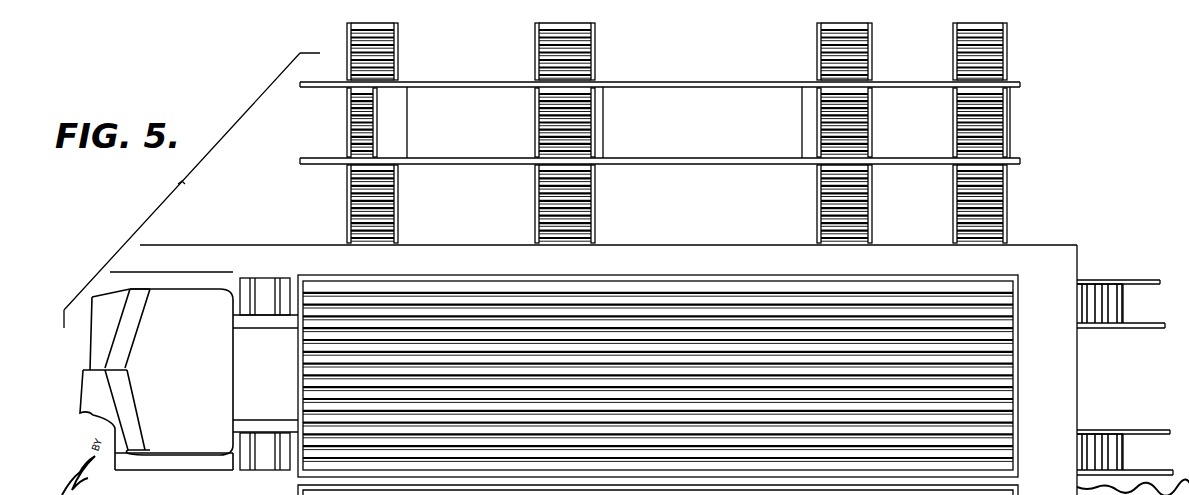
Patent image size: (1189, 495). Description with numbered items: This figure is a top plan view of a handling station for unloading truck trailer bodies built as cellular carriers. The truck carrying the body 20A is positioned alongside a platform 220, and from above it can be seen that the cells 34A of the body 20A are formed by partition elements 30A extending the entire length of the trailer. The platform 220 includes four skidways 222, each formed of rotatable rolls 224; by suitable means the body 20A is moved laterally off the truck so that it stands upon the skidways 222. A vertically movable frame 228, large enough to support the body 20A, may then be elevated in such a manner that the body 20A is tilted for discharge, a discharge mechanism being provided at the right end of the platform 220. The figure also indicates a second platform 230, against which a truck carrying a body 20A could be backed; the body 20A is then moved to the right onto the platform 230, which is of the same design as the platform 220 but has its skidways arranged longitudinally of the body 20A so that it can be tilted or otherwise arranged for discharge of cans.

The body 20A is at (658, 365).
The partition elements 30A is at (845, 292).
The cells 34A is at (758, 288).
The platform 220 is at (595, 70).
The skidways 222 is at (400, 213).
The rotatable rolls 224 is at (577, 203).
The vertically movable frame 228 is at (683, 160).
The second platform 230 is at (1105, 278).